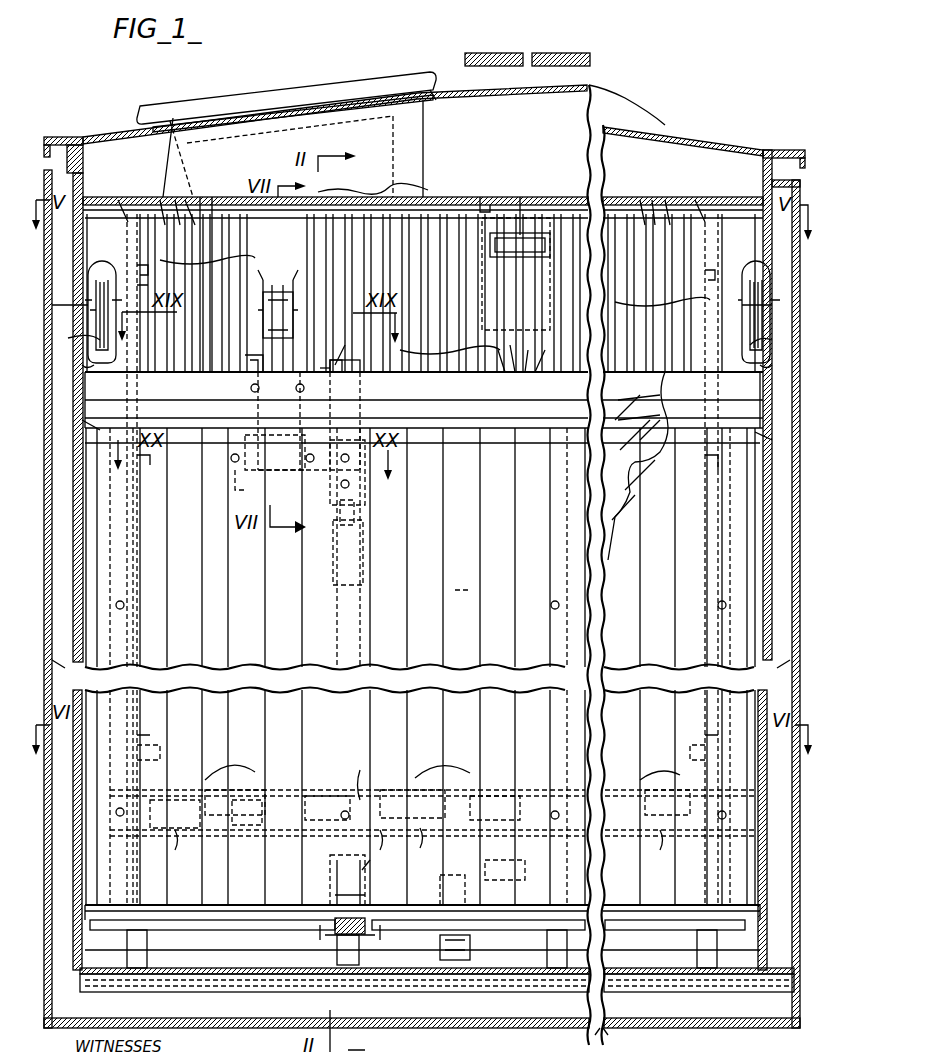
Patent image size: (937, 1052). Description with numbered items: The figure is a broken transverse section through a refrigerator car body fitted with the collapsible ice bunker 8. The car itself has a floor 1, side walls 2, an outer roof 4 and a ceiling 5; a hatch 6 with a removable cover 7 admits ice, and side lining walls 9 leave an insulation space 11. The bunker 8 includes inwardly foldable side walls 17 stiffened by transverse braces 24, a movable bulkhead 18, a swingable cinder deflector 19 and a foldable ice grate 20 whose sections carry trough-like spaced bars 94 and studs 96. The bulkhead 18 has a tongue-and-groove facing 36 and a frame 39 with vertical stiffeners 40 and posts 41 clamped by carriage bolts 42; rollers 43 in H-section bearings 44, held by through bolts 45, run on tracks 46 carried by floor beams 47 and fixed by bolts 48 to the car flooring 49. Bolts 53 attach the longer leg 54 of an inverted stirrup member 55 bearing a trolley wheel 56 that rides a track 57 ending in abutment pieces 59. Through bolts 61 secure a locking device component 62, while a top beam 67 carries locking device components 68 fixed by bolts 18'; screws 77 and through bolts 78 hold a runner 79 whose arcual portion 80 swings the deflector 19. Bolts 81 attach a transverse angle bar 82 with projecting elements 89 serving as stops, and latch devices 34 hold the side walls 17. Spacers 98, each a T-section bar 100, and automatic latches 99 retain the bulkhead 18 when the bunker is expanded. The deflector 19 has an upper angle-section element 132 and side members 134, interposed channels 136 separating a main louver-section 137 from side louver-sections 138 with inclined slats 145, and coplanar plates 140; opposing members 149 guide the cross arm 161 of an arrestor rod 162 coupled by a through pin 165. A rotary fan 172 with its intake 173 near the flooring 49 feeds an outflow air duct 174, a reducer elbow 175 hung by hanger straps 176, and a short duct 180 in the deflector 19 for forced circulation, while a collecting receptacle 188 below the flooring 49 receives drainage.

The floor 1 is at (601, 1040).
The side walls 2 is at (421, 671).
The outer roof 4 is at (622, 102).
The inner roof or ceiling 5 is at (603, 201).
The hatch 6 is at (424, 150).
The removable cover 7 is at (288, 94).
The collapsible bunker 8 is at (453, 700).
The side lining walls 9 is at (75, 470).
The insulation space 11 is at (78, 278).
The side walls 17 is at (140, 214).
The movable bulkhead 18 is at (422, 666).
The bolts 18' is at (266, 387).
The cinder deflector 19 is at (447, 214).
The ice grate 20 is at (427, 841).
The transverse braces 24 is at (140, 262).
The latch device 34 is at (421, 748).
The tongue-and-groove facing 36 is at (275, 672).
The frame 39 is at (180, 905).
The vertical stiffeners 40 is at (132, 396).
The posts 41 is at (362, 765).
The carriage bolts 42 is at (125, 606).
The rollers 43 is at (335, 890).
The H-section bearings 44 is at (333, 872).
The through bolts 45 is at (365, 895).
The tracks 46 is at (368, 938).
The floor beams 47 is at (147, 944).
The bolts 48 is at (340, 950).
The car flooring 49 is at (240, 930).
The bolts 53 is at (82, 430).
The longer leg 54 is at (424, 373).
The inverted stirrup member 55 is at (118, 270).
The trolley wheel 56 is at (114, 284).
The track 57 is at (423, 297).
The abutment pieces 59 is at (424, 343).
The through bolts 61 is at (230, 460).
The locking device component 62 is at (232, 485).
The beam 67 is at (665, 402).
The locking device components 68 is at (240, 362).
The screws 77 is at (350, 372).
The through bolts 78 is at (350, 480).
The runner 79 is at (365, 372).
The arcual portion 80 is at (340, 362).
The bolts 81 is at (125, 818).
The transverse angle bar 82 is at (735, 795).
The outwardly projecting elements 89 is at (325, 850).
The invert trough-like spaced bars 94 is at (442, 768).
The pins or studs 96 is at (419, 847).
The spacers 98 is at (358, 546).
The automatic latches 99 is at (322, 570).
The T-section bar 100 is at (337, 546).
The upper angle-section element 132 is at (200, 214).
The side members 134 is at (394, 199).
The interposed channels 136 is at (270, 280).
The main louver-section 137 is at (460, 350).
The side louver-sections 138 is at (435, 271).
The coplanar plates 140 is at (612, 500).
The inclined slats 145 is at (415, 287).
The opposing members 149 is at (278, 264).
The cross arm 161 is at (263, 312).
The arrestor rod 162 is at (258, 410).
The through pin 165 is at (242, 440).
The rotary fan 172 is at (457, 882).
The intake 173 is at (443, 947).
The outflow air duct 174 is at (486, 735).
The reducer elbow 175 is at (516, 253).
The hanger straps 176 is at (491, 194).
The short duct 180 is at (520, 257).
The collecting receptacle 188 is at (235, 992).